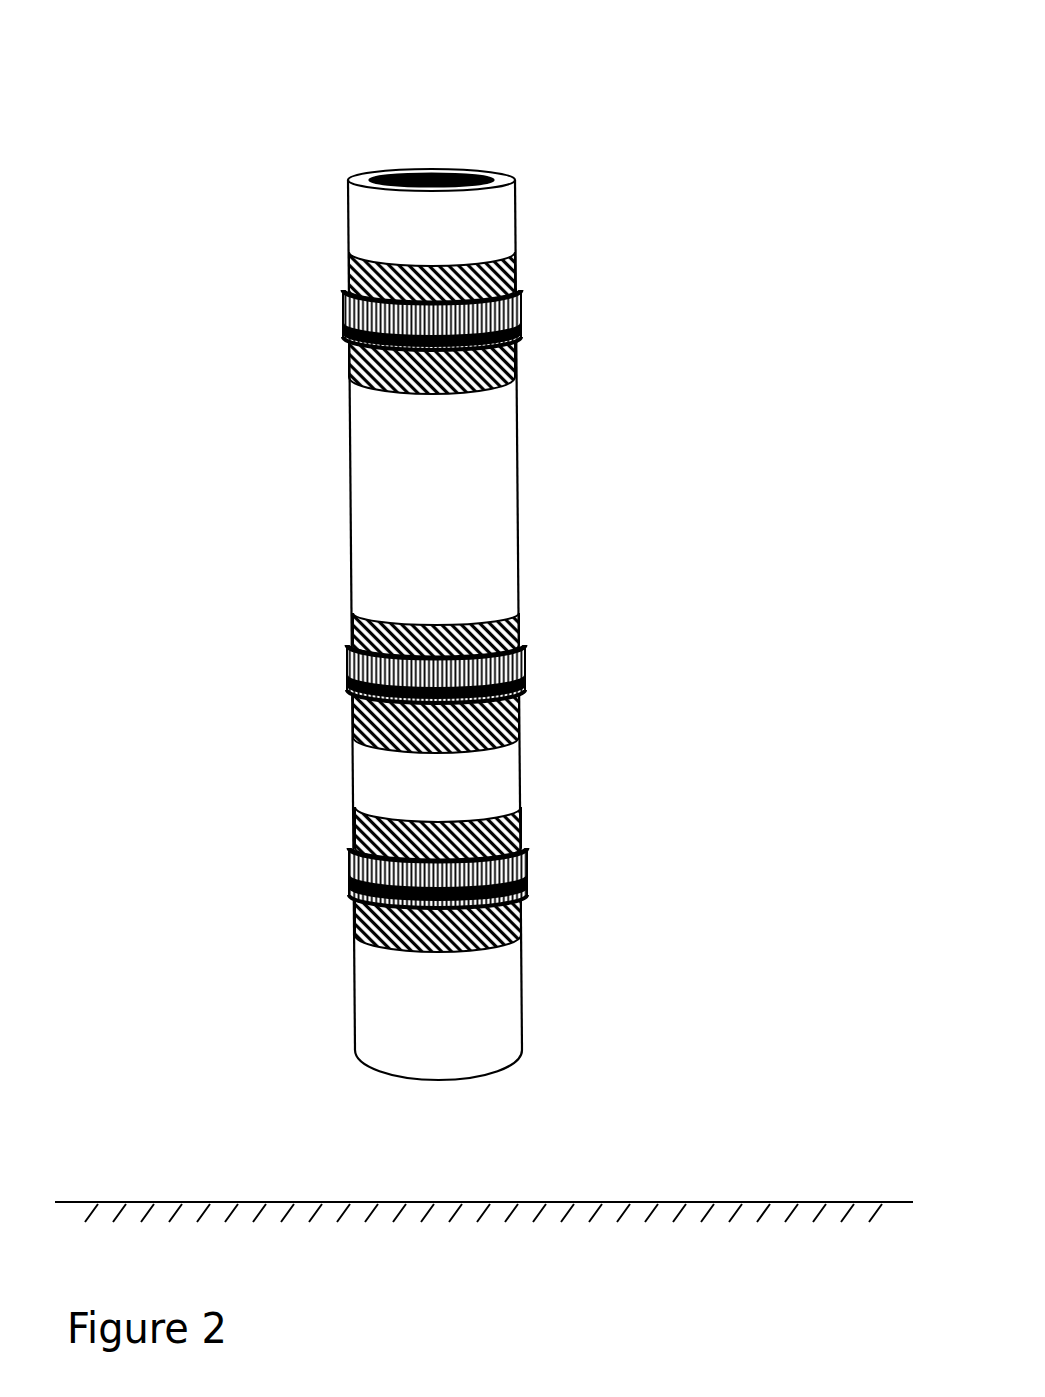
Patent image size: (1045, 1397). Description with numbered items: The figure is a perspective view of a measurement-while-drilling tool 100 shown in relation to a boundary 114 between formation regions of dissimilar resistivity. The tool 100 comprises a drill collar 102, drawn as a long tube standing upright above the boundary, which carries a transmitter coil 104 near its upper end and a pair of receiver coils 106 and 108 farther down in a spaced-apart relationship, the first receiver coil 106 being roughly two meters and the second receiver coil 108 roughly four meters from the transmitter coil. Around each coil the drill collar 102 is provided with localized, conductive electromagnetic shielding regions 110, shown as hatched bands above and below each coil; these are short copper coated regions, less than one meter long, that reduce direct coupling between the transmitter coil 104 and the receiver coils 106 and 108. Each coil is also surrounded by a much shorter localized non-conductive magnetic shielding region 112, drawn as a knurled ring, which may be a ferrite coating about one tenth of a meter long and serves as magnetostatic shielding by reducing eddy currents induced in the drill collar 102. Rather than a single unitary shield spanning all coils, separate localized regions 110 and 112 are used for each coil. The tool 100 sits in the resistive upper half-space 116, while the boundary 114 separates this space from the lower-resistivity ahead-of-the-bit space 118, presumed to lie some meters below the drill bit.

The MWD tool 100 is at (419, 34).
The drill collar 102 is at (517, 183).
The transmitter coil 104 is at (343, 320).
The receiver coil 106 is at (350, 668).
The receiver coil 108 is at (350, 868).
The conductive electromagnetic shielding regions 110 is at (517, 365).
The non-conductive magnetic shielding regions 112 is at (522, 296).
The boundary 114 is at (800, 1202).
The resistive upper half-space 116 is at (757, 1052).
The ahead-of-the-bit space 118 is at (757, 1339).